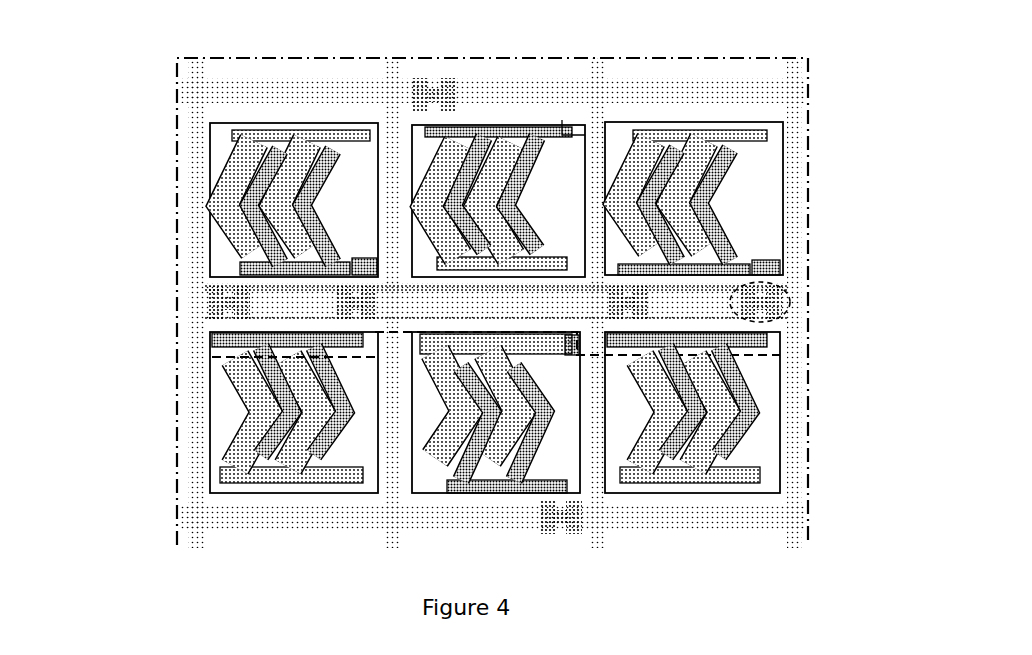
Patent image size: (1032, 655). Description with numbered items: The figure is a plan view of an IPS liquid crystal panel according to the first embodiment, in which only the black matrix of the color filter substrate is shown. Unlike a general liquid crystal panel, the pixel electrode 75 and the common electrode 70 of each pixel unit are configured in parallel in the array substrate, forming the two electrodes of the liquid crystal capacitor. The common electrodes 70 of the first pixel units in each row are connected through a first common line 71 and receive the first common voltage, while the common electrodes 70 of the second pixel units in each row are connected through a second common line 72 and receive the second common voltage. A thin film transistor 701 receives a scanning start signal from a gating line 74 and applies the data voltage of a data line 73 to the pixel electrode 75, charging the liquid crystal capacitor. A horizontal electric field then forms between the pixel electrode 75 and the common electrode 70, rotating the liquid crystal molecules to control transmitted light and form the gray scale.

The common electrode 70 is at (742, 138).
The first common line 71 is at (225, 252).
The second common line 72 is at (355, 352).
The data line 73 is at (793, 217).
The gating line 74 is at (800, 307).
The pixel electrode 75 is at (705, 195).
The thin film transistor 701 is at (785, 290).